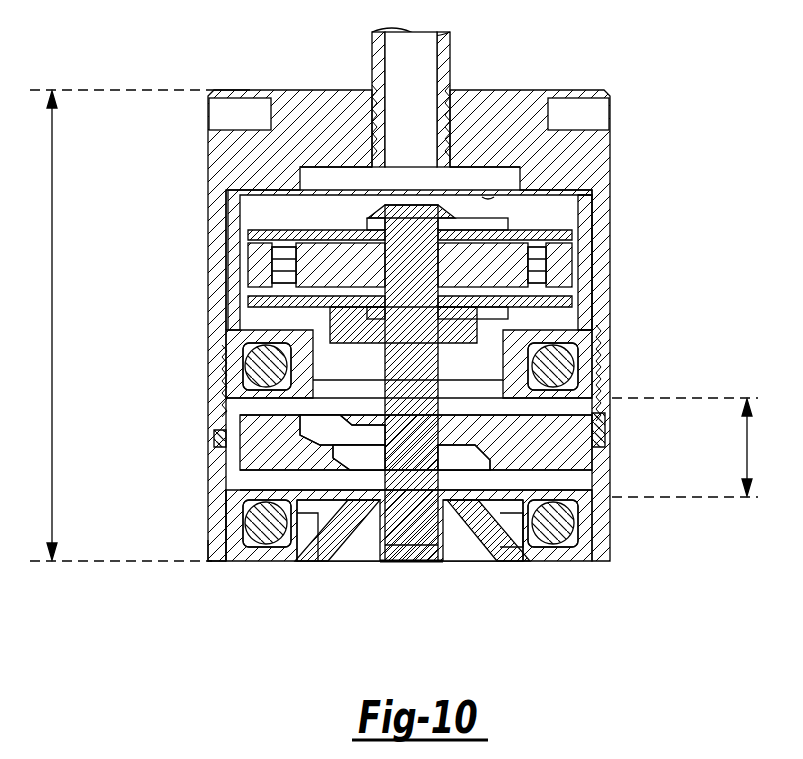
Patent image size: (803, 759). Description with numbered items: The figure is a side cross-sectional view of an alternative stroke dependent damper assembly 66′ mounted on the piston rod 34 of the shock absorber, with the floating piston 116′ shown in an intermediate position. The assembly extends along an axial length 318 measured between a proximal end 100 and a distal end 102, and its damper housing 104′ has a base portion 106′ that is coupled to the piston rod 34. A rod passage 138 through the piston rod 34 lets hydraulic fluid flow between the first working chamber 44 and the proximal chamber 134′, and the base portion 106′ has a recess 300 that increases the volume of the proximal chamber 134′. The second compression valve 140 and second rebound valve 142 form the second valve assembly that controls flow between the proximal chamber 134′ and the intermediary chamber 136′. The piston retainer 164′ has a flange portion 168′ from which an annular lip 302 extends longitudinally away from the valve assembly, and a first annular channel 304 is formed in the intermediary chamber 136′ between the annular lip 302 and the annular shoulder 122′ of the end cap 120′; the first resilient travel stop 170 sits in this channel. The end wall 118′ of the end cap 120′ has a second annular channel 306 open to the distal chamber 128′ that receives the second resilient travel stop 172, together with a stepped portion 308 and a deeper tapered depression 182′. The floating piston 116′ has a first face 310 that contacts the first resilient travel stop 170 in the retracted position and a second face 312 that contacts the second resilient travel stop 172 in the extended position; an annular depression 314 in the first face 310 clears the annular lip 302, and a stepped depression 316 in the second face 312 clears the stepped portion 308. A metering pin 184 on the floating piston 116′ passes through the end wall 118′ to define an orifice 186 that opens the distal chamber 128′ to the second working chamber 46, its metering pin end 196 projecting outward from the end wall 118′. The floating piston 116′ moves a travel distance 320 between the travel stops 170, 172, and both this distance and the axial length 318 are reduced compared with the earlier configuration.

The piston rod 34 is at (375, 52).
The rod passage 138 is at (414, 121).
The second compression valve 140 is at (293, 225).
The proximal chamber 134′ is at (488, 195).
The base portion 106′ is at (512, 116).
The first working chamber 44 is at (561, 67).
The proximal end 100 is at (216, 88).
The stroke dependent damper assembly 66′ is at (206, 196).
The recess 300 is at (530, 179).
The damper housing 104′ is at (210, 300).
The first annular channel 304 is at (507, 314).
The flange portion 168′ is at (301, 361).
The annular lip 302 is at (307, 366).
The piston retainer 164′ is at (554, 359).
The first resilient travel stop 170 is at (545, 388).
The intermediary chamber 136′ is at (252, 382).
The annular depression 314 is at (321, 422).
The floating piston 116′ is at (418, 430).
The second rebound valve 142 is at (515, 320).
The annular shoulder 122′ is at (605, 405).
The first face 310 is at (595, 412).
The distal chamber 128′ is at (293, 488).
The end cap 120′ is at (207, 522).
The stepped depression 316 is at (462, 456).
The second face 312 is at (560, 479).
The second resilient travel stop 172 is at (560, 528).
The distal end 102 is at (213, 565).
The second working chamber 46 is at (261, 622).
The second annular channel 306 is at (290, 542).
The stepped portion 308 is at (335, 518).
The metering pin end 196 is at (383, 565).
The metering pin 184 is at (407, 550).
The orifice 186 is at (446, 538).
The tapered depression 182′ is at (475, 545).
The end wall 118′ is at (520, 556).
The axial length 318 is at (122, 325).
The travel distance 320 is at (685, 447).